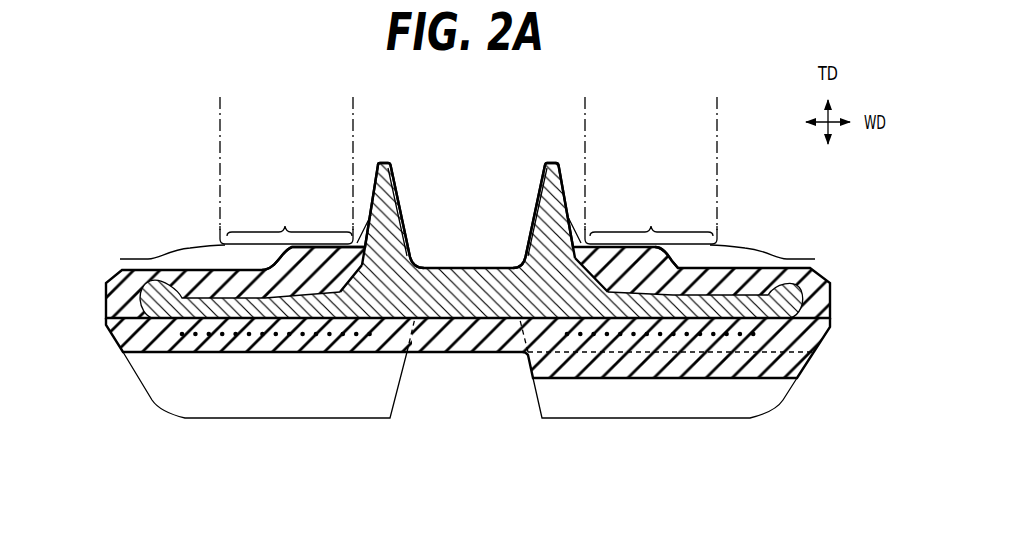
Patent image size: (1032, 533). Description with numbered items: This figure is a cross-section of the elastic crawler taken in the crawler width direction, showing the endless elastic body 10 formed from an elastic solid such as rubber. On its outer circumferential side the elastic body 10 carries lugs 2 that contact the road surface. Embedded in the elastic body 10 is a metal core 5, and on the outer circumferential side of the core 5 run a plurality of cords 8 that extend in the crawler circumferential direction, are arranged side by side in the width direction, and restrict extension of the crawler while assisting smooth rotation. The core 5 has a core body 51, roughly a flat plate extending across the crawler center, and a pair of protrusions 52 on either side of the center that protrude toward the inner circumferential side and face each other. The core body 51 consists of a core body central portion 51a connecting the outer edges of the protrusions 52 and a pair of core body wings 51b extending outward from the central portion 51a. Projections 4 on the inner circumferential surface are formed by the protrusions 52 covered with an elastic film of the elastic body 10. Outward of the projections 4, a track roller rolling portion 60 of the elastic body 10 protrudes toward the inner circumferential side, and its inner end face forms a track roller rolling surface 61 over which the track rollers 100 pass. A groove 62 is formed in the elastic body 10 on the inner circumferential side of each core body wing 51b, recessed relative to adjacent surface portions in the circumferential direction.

The track roller 100 is at (219, 146).
The lug 2 is at (294, 419).
The projection 4 is at (369, 198).
The metal core 5 is at (524, 298).
The core body 51 is at (451, 240).
The core body central portion 51a is at (468, 298).
The core body wing 51b is at (196, 303).
The protrusion 52 is at (384, 216).
The track roller rolling portion 60 is at (244, 251).
The track roller rolling surface 61 is at (470, 216).
The groove 62 is at (224, 268).
The cord 8 is at (178, 333).
The elastic body 10 is at (668, 360).